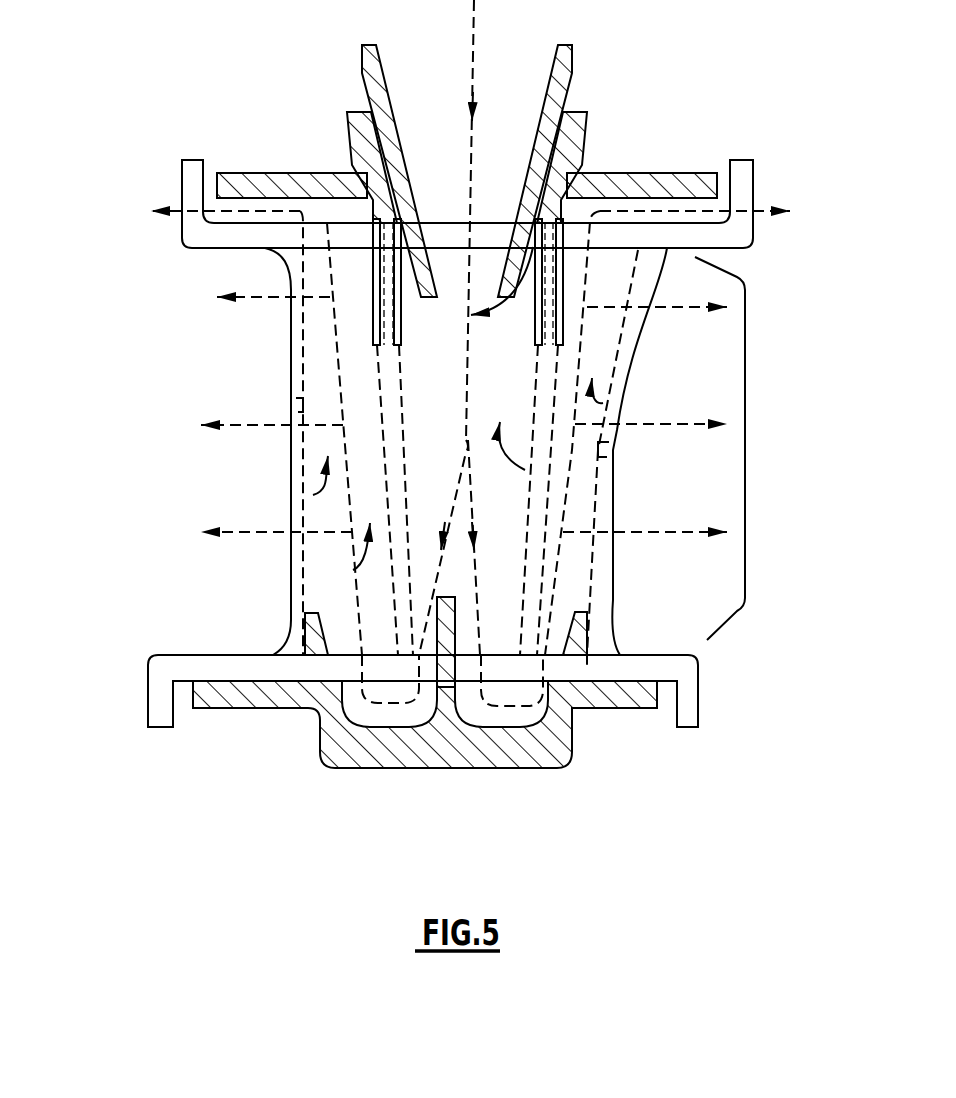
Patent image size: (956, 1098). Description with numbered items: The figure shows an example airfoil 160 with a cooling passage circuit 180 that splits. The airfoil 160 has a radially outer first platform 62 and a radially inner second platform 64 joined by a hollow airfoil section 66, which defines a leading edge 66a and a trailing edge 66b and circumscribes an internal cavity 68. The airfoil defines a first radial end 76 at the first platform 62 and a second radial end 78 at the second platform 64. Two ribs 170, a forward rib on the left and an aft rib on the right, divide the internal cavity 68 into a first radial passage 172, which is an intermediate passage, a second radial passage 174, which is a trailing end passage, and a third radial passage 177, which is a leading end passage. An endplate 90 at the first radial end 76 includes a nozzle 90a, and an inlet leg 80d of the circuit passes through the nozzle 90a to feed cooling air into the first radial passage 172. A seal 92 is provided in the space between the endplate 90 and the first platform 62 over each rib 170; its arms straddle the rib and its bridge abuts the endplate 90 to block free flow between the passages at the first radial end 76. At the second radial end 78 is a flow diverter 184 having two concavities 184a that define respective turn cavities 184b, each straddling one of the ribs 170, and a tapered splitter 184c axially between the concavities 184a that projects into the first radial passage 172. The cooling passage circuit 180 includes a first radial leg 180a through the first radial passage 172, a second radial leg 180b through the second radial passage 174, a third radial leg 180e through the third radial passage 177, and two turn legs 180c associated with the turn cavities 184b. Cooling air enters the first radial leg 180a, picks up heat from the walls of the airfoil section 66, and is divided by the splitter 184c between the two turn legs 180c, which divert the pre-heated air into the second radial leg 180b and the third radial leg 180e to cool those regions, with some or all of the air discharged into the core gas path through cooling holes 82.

The first platform 62 is at (735, 232).
The second platform 64 is at (690, 668).
The airfoil section 66 is at (745, 430).
The leading edge 66a is at (291, 340).
The trailing edge 66b is at (613, 515).
The internal cavity 68 is at (353, 570).
The first radial end 76 is at (128, 212).
The second radial end 78 is at (142, 660).
The cooling holes 82 is at (296, 410).
The endplate 90 is at (671, 184).
The nozzle 90a is at (385, 110).
The seal 92 is at (385, 267).
The airfoil 160 is at (183, 483).
The ribs 170 is at (395, 378).
The first radial passage 172 is at (525, 470).
The second radial passage 174 is at (603, 403).
The third radial passage 177 is at (313, 495).
The cooling passage circuit 180 is at (537, 267).
The first radial leg 180a is at (463, 345).
The second radial leg 180b is at (560, 560).
The turn legs 180c is at (388, 703).
The inlet leg 80d is at (473, 80).
The third radial leg 180e is at (335, 305).
The flow diverter 184 is at (548, 740).
The concavities 184a is at (359, 712).
The turn cavities 184b is at (358, 708).
The splitter 184c is at (400, 705).